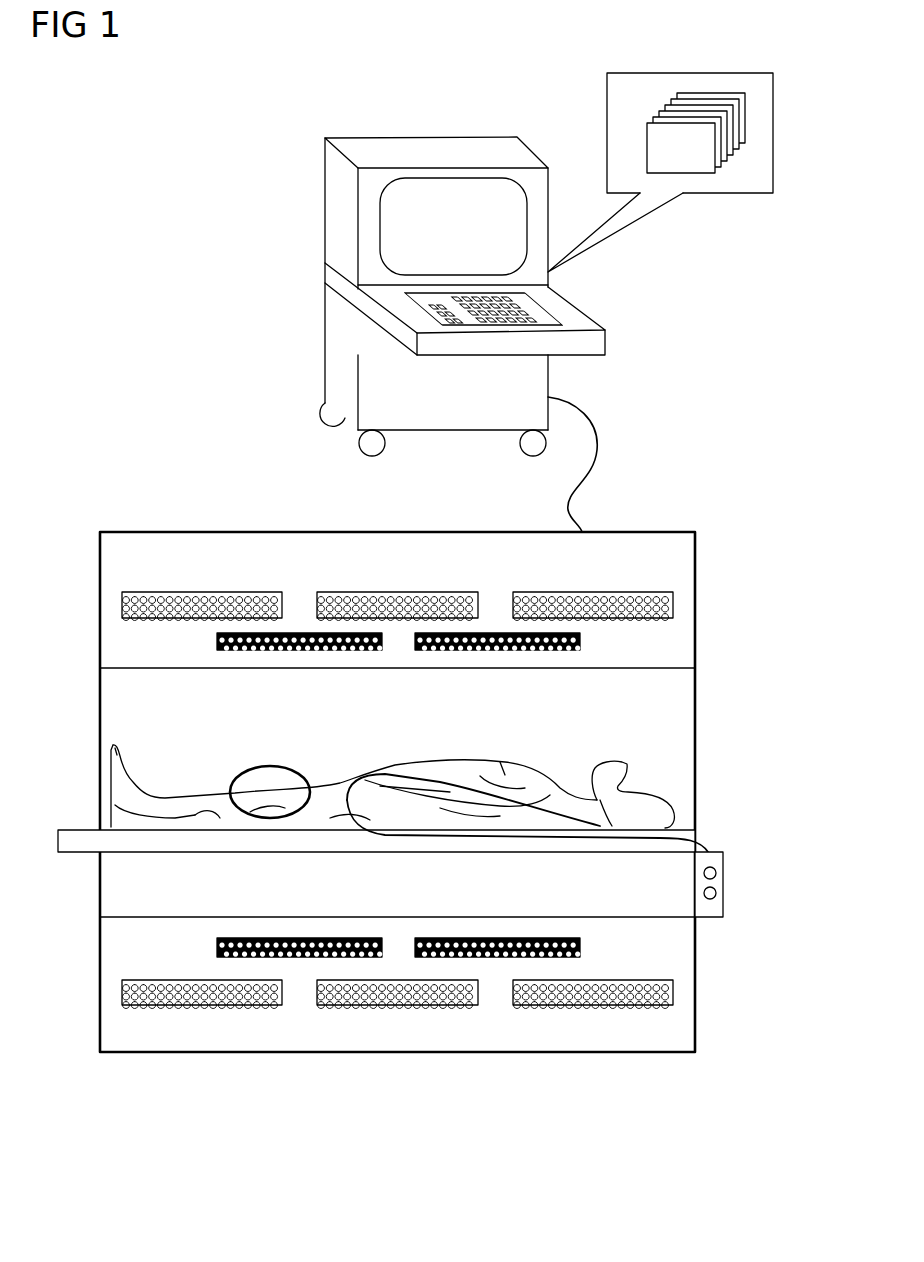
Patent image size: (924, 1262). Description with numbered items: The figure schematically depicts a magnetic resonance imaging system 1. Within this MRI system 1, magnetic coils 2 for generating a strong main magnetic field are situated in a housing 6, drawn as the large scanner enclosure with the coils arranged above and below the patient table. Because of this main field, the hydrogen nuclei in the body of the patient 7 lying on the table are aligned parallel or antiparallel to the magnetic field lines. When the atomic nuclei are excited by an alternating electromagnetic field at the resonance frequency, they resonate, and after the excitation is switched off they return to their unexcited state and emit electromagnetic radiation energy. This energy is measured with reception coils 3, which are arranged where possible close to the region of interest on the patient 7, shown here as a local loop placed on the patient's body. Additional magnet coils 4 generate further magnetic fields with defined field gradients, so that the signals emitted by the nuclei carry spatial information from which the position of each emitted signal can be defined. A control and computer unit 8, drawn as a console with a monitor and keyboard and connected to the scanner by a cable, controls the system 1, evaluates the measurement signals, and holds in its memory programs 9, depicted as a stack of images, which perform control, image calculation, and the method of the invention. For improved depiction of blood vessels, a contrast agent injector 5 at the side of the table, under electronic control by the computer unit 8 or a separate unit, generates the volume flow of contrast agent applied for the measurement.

The magnetic resonance imaging system 1 is at (148, 170).
The magnetic coils 2 is at (122, 605).
The reception coils 3 is at (270, 766).
The additional magnet coils 4 is at (217, 650).
The contrast agent injector 5 is at (723, 867).
The housing 6 is at (523, 1055).
The patient 7 is at (522, 762).
The control and computer unit 8 is at (597, 318).
The programs 9 is at (700, 173).